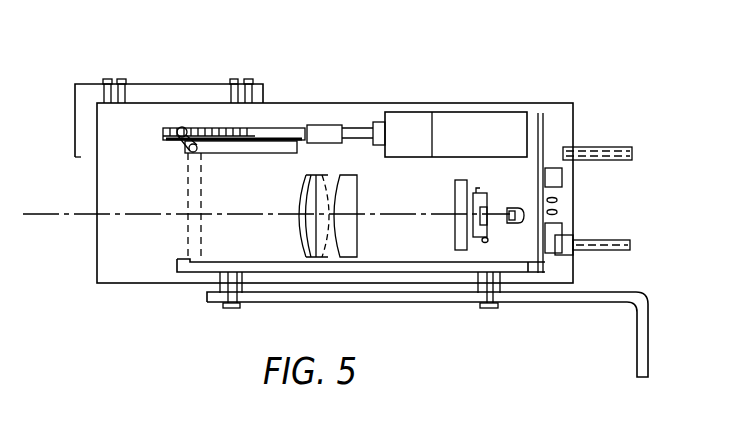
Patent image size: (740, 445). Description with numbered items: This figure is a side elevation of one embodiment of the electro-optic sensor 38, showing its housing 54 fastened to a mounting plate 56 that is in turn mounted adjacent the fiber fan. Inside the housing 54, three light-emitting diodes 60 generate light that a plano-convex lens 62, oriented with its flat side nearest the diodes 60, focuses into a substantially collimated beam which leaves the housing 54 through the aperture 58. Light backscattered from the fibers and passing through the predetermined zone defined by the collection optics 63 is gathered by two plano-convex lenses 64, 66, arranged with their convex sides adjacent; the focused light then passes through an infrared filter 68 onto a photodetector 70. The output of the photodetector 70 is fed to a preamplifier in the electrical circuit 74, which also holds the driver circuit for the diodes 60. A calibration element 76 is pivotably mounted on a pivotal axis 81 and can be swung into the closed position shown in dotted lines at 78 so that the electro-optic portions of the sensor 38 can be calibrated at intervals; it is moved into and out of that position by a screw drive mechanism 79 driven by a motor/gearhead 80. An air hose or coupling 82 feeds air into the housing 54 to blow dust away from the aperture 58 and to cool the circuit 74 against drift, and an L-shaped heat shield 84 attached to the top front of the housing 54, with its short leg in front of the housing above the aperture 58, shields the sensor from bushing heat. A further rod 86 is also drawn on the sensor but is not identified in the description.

The electro-optic sensor 38 is at (576, 98).
The housing 54 is at (373, 103).
The mounting plate 56 is at (552, 299).
The aperture 58 is at (100, 222).
The light-emitting diodes 60 is at (524, 224).
The plano-convex lens 62 is at (327, 198).
The collection optics 63 is at (364, 238).
The plano-convex lens 64 is at (305, 175).
The plano-convex lens 66 is at (332, 177).
The infrared filter 68 is at (457, 183).
The photodetector 70 is at (486, 172).
The electrical circuit 74 is at (560, 205).
The calibration element 76 is at (210, 153).
The closed position 78 is at (187, 197).
The screw drive mechanism 79 is at (238, 127).
The motor/gearhead 80 is at (475, 120).
The pivotal axis 81 is at (184, 153).
The air hose or coupling 82 is at (610, 146).
The L-shaped heat shield 84 is at (170, 83).
The lower rod 86 is at (597, 238).